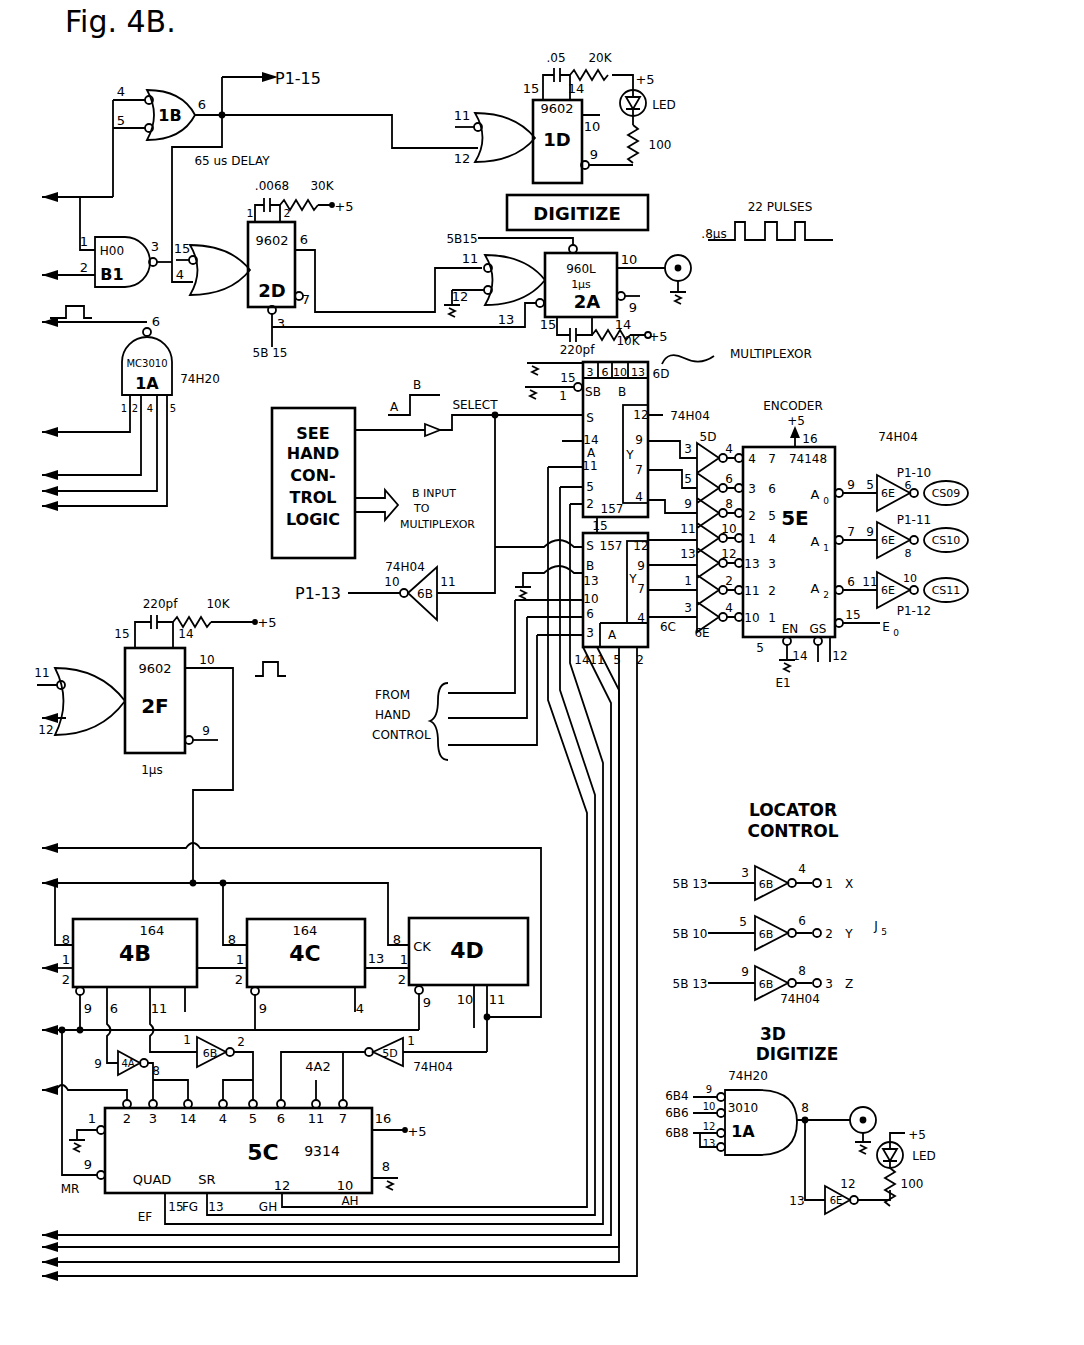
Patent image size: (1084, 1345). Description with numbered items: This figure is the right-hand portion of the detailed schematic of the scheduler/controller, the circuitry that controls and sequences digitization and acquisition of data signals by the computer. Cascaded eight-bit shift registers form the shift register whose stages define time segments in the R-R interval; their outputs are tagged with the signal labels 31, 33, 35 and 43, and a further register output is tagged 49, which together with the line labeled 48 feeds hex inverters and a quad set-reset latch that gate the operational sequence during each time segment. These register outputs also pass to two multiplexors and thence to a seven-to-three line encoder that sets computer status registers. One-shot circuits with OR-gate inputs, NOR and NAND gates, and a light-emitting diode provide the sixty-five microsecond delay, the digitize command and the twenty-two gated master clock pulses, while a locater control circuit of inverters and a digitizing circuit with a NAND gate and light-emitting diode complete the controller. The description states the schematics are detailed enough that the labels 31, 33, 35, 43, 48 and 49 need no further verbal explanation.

In FIG. 4B, the shift register 4B output (pin 6) 31 is at (107, 1014).
In FIG. 4B, the shift register 4B output (pin 11) 33 is at (168, 1008).
In FIG. 4B, the shift register 4B serial output (pin 13) 35 is at (212, 952).
In FIG. 4C, the shift register 4C serial output (pin 13) 43 is at (375, 952).
In FIG. 4B, the cable 48 is at (445, 1042).
In FIG. 4D, the shift register 4D output (pin 11) 49 is at (509, 1007).